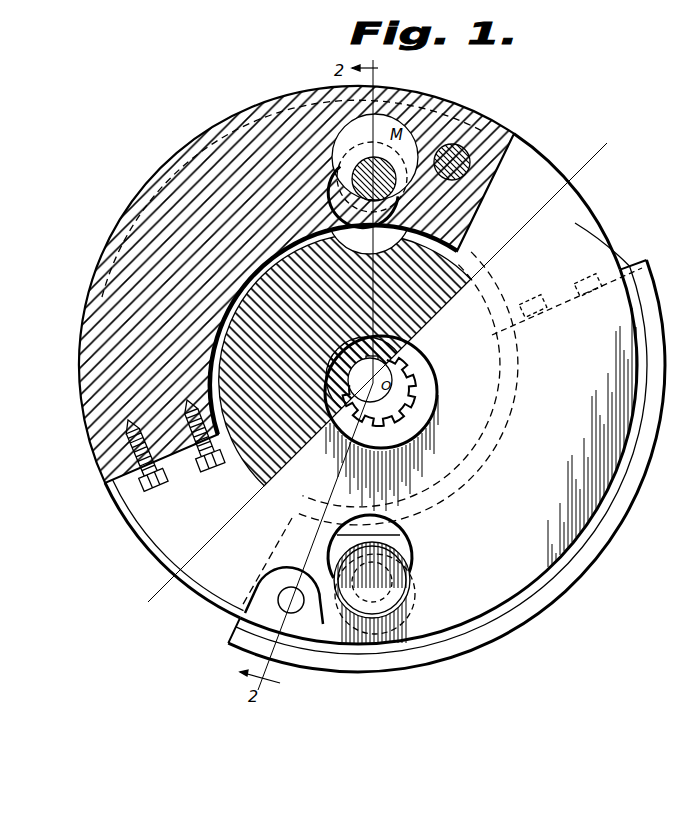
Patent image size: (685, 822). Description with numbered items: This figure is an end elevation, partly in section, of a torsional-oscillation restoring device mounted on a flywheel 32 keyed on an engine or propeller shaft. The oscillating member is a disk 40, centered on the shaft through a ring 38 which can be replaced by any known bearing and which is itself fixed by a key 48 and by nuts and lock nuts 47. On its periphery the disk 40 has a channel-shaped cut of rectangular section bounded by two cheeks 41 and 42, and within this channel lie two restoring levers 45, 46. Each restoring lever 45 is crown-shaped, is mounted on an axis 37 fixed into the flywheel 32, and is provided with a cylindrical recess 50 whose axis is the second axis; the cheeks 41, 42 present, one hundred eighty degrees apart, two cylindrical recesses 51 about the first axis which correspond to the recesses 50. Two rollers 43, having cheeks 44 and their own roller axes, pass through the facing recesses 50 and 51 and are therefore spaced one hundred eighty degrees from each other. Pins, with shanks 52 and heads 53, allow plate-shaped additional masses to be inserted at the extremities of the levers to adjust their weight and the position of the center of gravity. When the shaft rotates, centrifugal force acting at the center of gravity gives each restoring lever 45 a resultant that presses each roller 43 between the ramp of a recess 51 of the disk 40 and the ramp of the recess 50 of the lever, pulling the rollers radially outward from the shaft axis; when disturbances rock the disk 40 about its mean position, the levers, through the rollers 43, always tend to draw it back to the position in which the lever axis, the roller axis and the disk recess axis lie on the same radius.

The flywheel 32 is at (152, 550).
The axes 37 is at (514, 140).
The ring 38 is at (388, 352).
The disk 40 is at (488, 331).
The cheek 41 is at (543, 192).
The cheek 42 is at (573, 220).
The rollers 43 is at (368, 140).
The roller cheeks 44 is at (472, 185).
The restoring lever 45 is at (232, 178).
The restoring lever 46 is at (622, 530).
The nuts and lock nuts 47 is at (384, 443).
The key 48 is at (406, 368).
The cylindrical recess 50 is at (344, 122).
The cylindrical recess 51 is at (403, 228).
The pin shanks 52 is at (153, 507).
The pin heads 53 is at (148, 488).